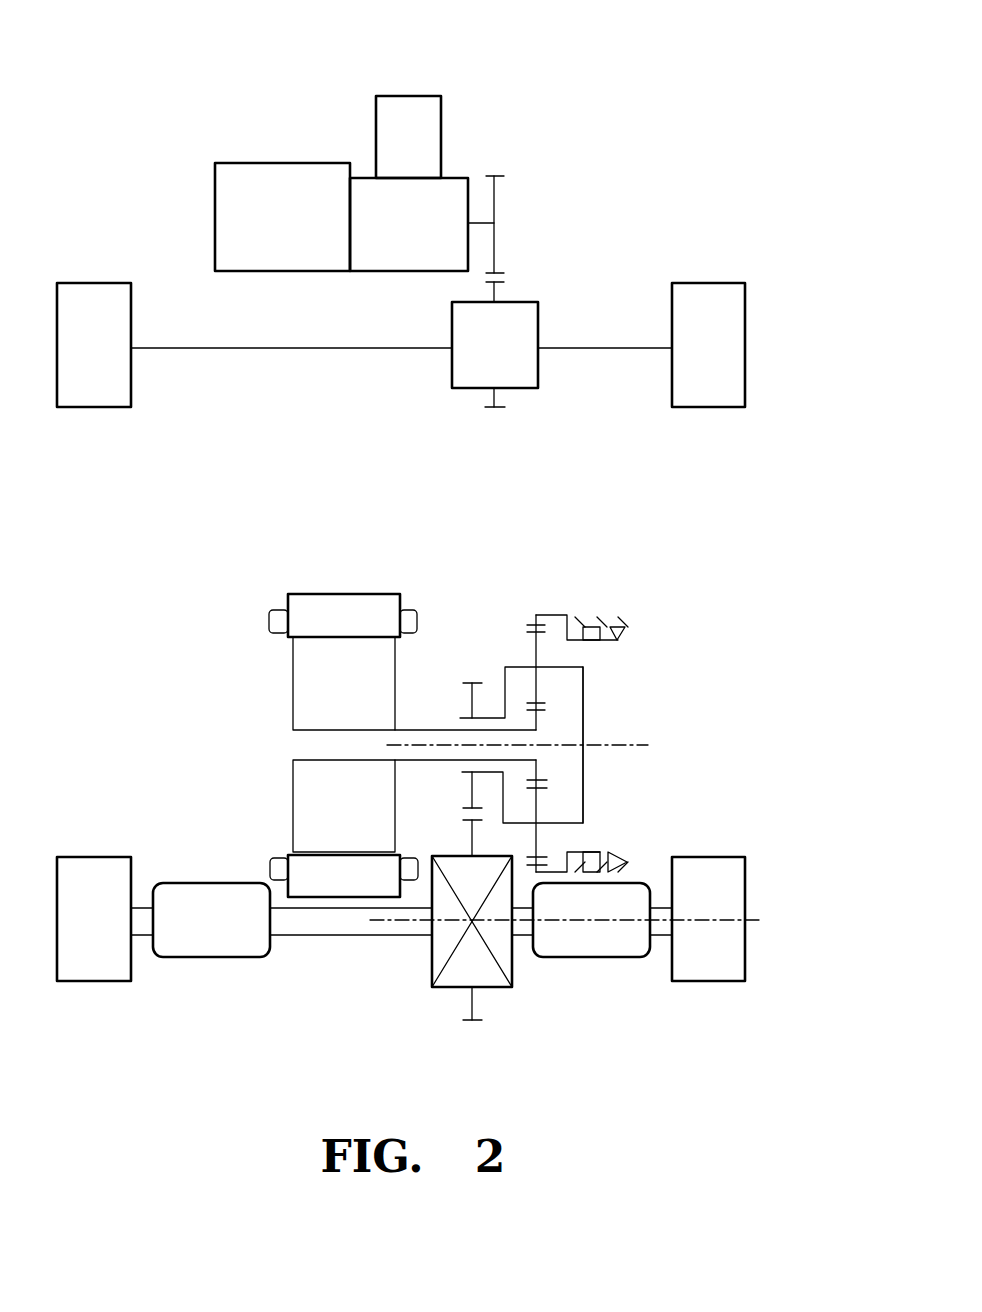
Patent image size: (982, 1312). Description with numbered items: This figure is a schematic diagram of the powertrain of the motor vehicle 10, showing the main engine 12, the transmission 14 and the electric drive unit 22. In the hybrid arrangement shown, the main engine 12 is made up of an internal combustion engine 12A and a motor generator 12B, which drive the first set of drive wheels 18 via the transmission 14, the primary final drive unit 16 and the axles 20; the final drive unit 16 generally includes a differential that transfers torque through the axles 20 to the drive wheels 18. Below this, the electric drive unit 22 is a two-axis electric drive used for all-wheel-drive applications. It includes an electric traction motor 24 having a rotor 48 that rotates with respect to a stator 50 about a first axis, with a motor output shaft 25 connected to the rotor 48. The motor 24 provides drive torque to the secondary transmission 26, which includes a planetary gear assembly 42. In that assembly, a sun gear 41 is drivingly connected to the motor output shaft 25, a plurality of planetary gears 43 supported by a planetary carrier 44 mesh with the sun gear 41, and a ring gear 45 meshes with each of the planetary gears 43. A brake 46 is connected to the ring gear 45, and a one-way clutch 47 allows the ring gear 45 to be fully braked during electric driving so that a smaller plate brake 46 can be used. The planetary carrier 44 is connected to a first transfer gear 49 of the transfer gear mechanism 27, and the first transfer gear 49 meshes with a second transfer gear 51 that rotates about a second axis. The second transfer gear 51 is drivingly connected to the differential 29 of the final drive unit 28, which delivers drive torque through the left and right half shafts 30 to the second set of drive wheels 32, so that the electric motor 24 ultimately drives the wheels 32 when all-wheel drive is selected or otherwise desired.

The motor vehicle 10 is at (802, 265).
The main engine 12 is at (351, 68).
The internal combustion engine 12A is at (215, 205).
The motor generator 12B is at (441, 141).
The transmission 14 is at (402, 272).
The final drive unit 16 is at (472, 390).
The first set of drive wheels 18 is at (93, 407).
The axles 20 is at (270, 349).
The electric drive unit 22 is at (225, 670).
The electric traction motor 24 is at (367, 578).
The motor output shaft 25 is at (452, 762).
The secondary transmission 26 is at (515, 610).
The transfer gear mechanism 27 is at (467, 660).
The final drive unit 28 is at (415, 975).
The differential 29 is at (500, 988).
The half shafts 30 is at (353, 935).
The second set of drive wheels 32 is at (93, 981).
The sun gear 41 is at (547, 712).
The planetary gear assembly 42 is at (517, 656).
The planetary gears 43 is at (552, 627).
The planetary carrier 44 is at (565, 660).
The ring gear 45 is at (528, 623).
The brake 46 is at (622, 638).
The one-way clutch 47 is at (628, 632).
The rotor 48 is at (292, 808).
The first transfer gear 49 is at (470, 683).
The stator 50 is at (318, 603).
The second transfer gear 51 is at (470, 1022).